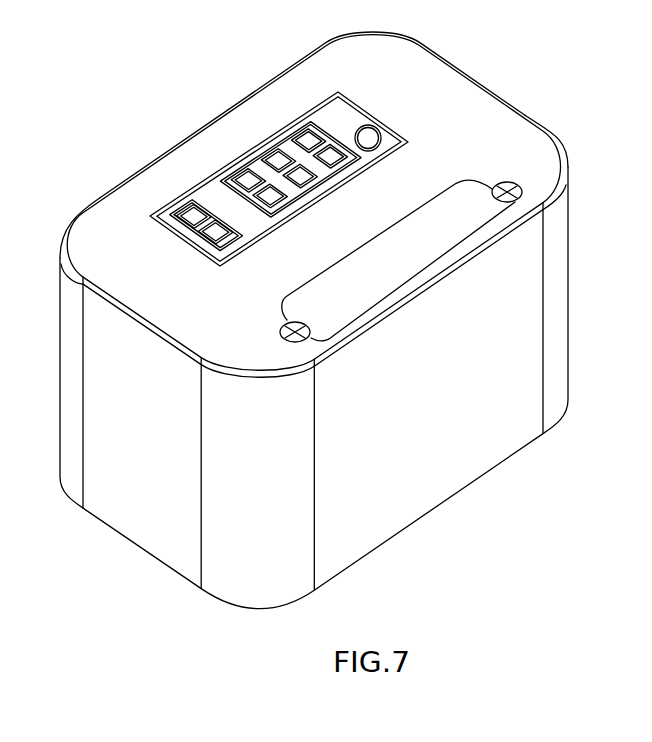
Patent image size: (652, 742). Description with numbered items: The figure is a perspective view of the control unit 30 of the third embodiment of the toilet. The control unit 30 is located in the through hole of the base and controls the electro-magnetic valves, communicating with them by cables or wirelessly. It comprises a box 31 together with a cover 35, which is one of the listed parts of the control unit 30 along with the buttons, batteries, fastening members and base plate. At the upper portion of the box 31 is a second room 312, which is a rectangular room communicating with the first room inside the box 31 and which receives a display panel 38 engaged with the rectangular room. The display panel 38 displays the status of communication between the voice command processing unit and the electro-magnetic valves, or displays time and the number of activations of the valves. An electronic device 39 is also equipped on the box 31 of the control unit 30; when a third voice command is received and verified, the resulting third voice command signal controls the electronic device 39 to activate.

The control unit 30 is at (513, 435).
The box 31 is at (540, 162).
The second room 312 is at (173, 200).
The cover 35 is at (472, 227).
The display panel 38 is at (220, 172).
The electronic device 39 is at (360, 128).